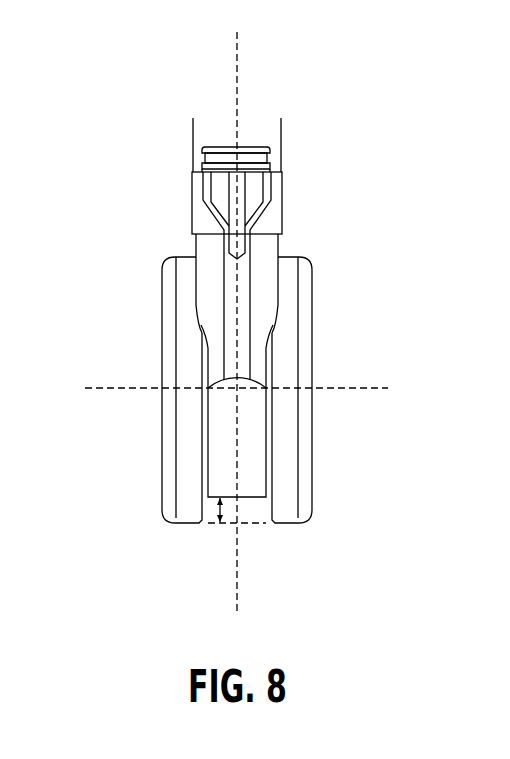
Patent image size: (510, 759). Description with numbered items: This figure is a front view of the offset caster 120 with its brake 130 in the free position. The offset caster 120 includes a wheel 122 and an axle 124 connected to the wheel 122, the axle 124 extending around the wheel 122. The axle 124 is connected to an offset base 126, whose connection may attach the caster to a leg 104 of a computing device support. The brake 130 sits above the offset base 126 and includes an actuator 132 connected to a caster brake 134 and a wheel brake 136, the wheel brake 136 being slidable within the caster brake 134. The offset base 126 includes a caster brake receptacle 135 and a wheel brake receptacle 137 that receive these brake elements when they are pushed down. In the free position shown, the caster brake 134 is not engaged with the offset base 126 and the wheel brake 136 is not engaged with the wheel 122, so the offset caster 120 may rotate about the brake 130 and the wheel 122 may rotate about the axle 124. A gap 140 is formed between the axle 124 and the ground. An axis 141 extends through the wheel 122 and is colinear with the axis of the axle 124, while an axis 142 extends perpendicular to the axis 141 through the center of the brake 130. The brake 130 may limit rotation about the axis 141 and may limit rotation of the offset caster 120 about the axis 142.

The leg 104 is at (281, 135).
The offset caster 120 is at (140, 82).
The wheel 122 is at (312, 278).
The axle 124 is at (250, 500).
The offset base 126 is at (282, 203).
The brake 130 is at (223, 132).
The actuator 132 is at (240, 147).
The caster brake 134 is at (208, 190).
The caster brake receptacle 135 is at (202, 222).
The wheel brake 136 is at (248, 247).
The wheel brake receptacle 137 is at (250, 318).
The gap 140 is at (230, 512).
The axis 141 is at (358, 390).
The axis 142 is at (240, 56).